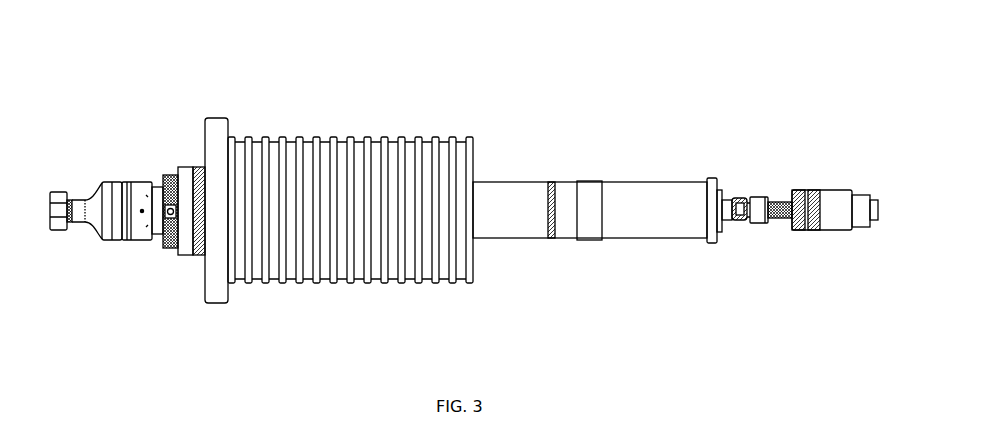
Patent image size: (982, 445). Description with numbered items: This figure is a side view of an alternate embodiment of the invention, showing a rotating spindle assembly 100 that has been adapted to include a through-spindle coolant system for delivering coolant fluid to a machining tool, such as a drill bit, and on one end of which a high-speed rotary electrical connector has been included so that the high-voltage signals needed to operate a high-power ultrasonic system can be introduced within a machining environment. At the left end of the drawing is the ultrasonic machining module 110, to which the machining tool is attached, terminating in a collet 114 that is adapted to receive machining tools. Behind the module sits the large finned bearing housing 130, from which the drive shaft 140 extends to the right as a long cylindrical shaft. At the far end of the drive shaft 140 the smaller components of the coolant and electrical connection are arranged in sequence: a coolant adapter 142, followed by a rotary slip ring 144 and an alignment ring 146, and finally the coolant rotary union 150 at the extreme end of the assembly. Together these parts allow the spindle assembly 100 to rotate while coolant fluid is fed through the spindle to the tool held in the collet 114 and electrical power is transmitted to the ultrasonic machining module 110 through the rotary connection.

The rotating spindle assembly 100 is at (535, 86).
The ultrasonic machining module 110 is at (138, 247).
The collet 114 is at (58, 191).
The bearing housing 130 is at (350, 284).
The drive shaft 140 is at (645, 240).
The coolant adapter 142 is at (737, 194).
The rotary slip ring 144 is at (762, 225).
The alignment ring 146 is at (781, 201).
The coolant rotary union 150 is at (835, 232).